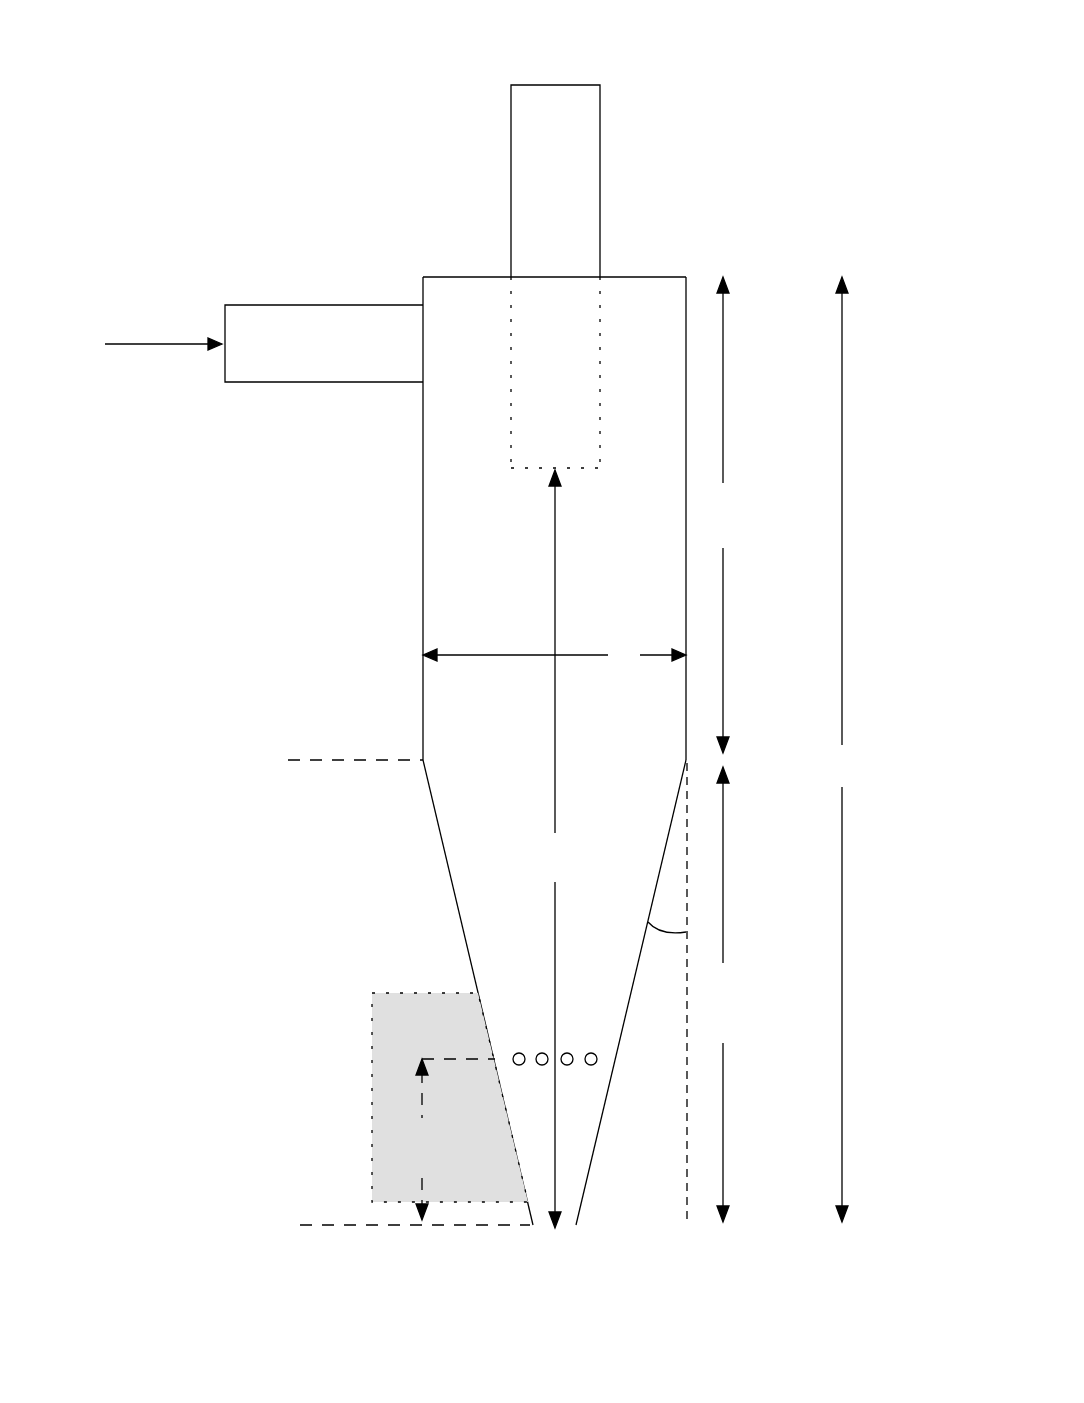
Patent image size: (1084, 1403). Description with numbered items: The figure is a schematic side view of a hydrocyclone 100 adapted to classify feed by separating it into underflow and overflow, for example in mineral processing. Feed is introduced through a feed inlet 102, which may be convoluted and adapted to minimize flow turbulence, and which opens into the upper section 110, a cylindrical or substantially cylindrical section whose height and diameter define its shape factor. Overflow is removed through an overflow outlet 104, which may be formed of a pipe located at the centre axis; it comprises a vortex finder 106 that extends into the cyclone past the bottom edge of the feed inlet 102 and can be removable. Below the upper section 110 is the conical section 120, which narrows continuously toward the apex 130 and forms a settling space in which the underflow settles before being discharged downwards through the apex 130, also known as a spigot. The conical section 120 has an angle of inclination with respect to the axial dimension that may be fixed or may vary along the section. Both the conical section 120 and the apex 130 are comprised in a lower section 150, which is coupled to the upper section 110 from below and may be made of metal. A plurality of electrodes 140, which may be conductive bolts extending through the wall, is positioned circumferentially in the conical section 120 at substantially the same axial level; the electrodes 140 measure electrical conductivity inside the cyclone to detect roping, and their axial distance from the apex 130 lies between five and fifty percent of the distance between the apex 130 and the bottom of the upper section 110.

The hydrocyclone 100 is at (742, 138).
The feed inlet 102 is at (286, 305).
The overflow outlet 104 is at (553, 85).
The vortex finder 106 is at (600, 312).
The upper section 110 is at (423, 447).
The conical section 120 is at (450, 878).
The apex 130 is at (570, 1228).
The plurality of electrodes 140 is at (517, 1052).
The lower section 150 is at (462, 942).